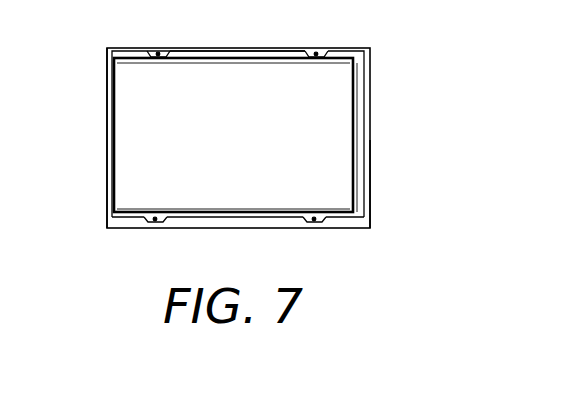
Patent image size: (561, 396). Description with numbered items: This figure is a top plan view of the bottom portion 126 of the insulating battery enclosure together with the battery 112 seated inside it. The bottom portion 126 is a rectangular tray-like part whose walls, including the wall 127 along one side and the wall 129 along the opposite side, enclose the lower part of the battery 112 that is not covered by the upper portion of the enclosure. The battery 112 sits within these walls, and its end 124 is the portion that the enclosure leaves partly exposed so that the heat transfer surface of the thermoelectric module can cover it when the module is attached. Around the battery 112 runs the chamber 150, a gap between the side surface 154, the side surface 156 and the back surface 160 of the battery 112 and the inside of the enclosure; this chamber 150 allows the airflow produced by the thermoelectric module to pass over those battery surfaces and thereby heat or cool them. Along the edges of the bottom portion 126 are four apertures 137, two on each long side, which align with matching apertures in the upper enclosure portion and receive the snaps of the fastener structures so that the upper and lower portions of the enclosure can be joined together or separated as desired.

The battery 112 is at (284, 180).
The end of battery 124 is at (114, 87).
The bottom portion of enclosure 126 is at (370, 173).
The wall of bottom portion 127 is at (372, 188).
The wall of bottom portion 129 is at (105, 128).
The apertures 137 is at (158, 49).
The chamber 150 is at (372, 65).
The side surface of battery 154 is at (243, 220).
The side surface of battery 156 is at (233, 60).
The back surface of battery 160 is at (372, 101).